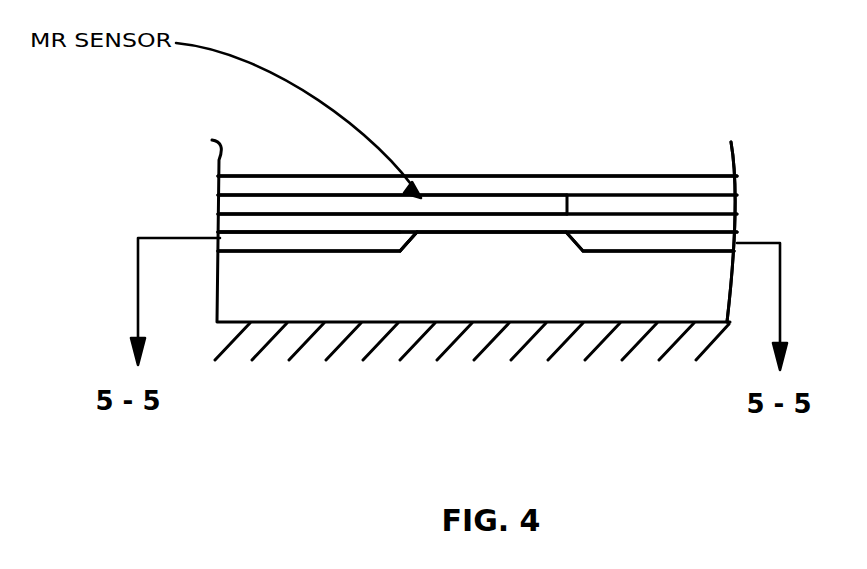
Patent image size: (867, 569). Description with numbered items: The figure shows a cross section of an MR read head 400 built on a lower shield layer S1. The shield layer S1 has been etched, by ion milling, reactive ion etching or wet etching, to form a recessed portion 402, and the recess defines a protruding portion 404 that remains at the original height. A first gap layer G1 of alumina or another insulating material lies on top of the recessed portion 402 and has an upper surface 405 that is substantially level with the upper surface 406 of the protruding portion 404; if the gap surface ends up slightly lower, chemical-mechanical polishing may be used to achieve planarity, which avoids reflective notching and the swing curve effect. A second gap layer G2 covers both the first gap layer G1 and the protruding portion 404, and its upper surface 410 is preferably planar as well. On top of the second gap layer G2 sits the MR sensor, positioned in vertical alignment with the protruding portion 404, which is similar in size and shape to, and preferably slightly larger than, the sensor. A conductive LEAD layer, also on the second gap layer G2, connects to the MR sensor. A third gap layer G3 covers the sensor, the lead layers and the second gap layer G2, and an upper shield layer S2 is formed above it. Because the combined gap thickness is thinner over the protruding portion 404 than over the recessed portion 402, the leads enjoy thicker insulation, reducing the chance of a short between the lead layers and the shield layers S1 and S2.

The MR read head 400 is at (688, 136).
The recessed portion 402 is at (595, 255).
The protruding portion 404 is at (443, 235).
The upper surface of first gap layer 405 is at (662, 233).
The upper surface of protruding portion 406 is at (418, 232).
The upper surface of second gap layer 410 is at (270, 215).
The first gap layer G1 is at (234, 239).
The second gap layer G2 is at (217, 217).
The third gap layer G3 is at (217, 178).
The shield layer S1 is at (356, 258).
The shield layer S2 is at (477, 159).
The lead layer LEAD is at (217, 200).